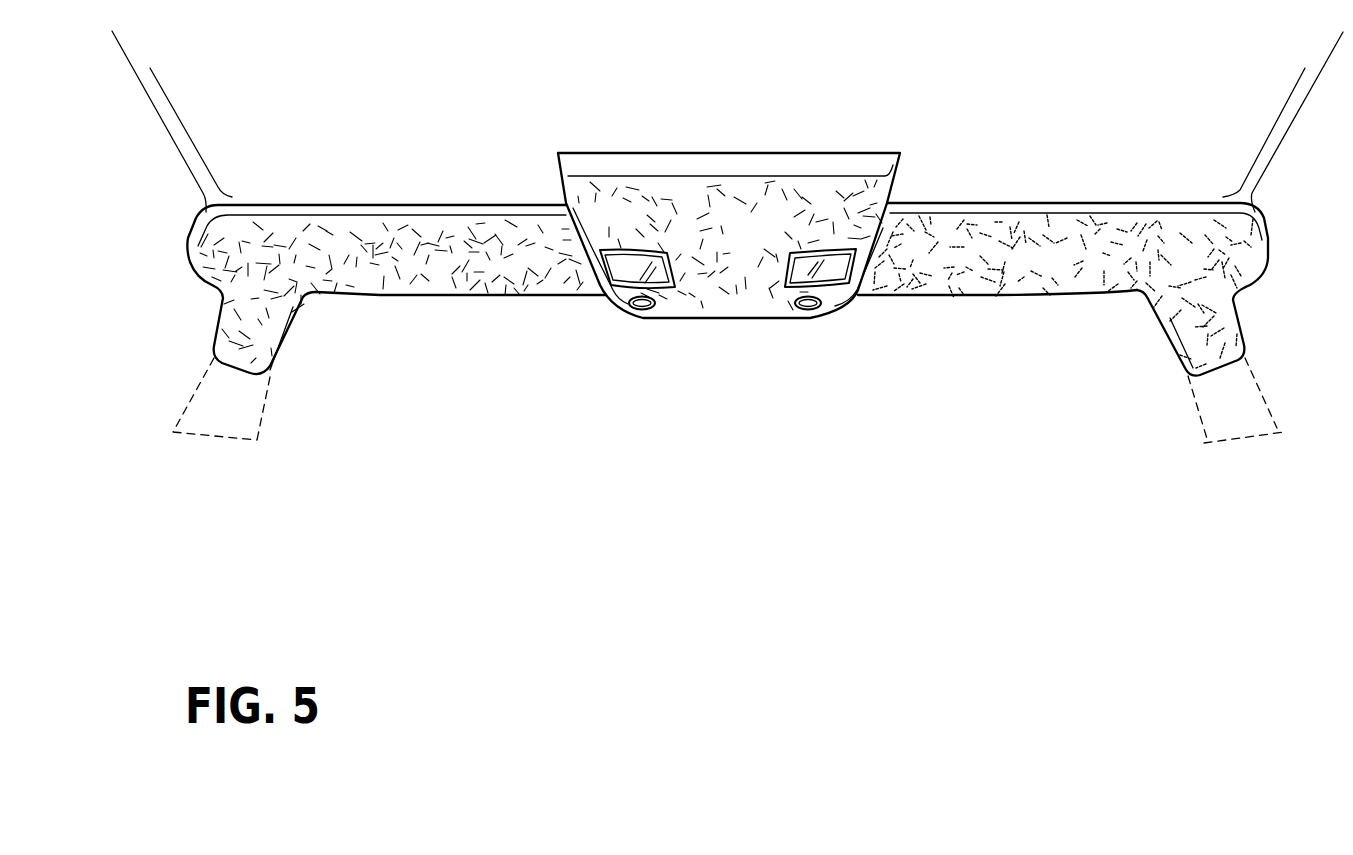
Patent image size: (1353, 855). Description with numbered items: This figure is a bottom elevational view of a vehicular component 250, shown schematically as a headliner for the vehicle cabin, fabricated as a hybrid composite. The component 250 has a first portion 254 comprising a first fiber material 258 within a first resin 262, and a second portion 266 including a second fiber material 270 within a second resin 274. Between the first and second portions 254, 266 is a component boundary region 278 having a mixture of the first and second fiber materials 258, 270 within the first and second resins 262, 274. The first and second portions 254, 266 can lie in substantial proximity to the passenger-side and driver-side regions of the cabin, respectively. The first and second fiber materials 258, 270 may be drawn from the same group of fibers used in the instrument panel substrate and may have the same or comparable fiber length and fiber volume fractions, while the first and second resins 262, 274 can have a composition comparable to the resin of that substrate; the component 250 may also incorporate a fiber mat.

The vehicular component 250 is at (606, 404).
The first portion 254 is at (423, 196).
The first fiber material 258 is at (380, 273).
The first resin 262 is at (462, 264).
The second portion 266 is at (997, 196).
The second fiber material 270 is at (927, 255).
The second resin 274 is at (1048, 269).
The component boundary region 278 is at (722, 148).